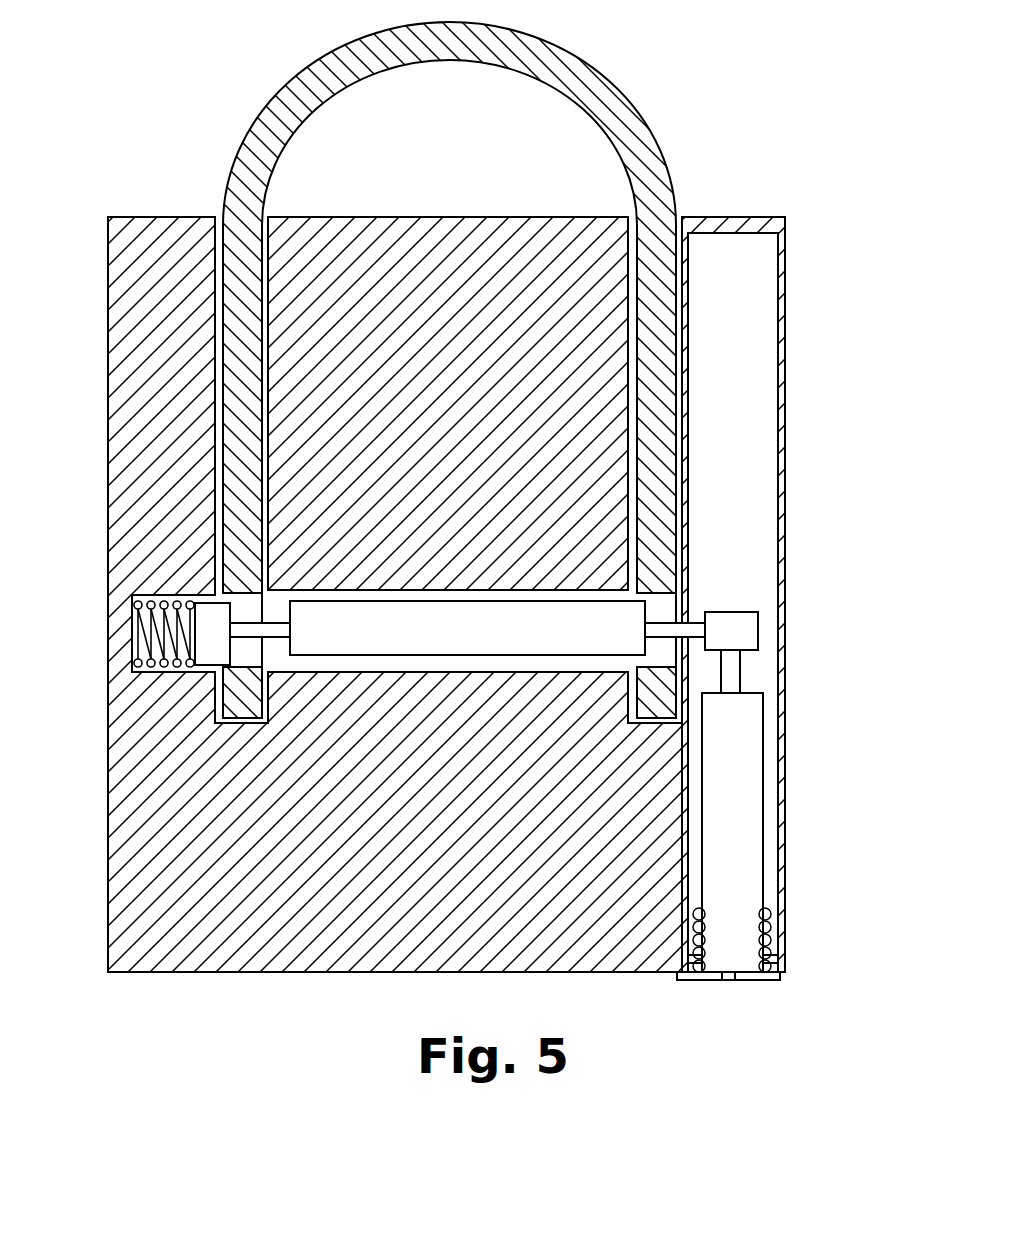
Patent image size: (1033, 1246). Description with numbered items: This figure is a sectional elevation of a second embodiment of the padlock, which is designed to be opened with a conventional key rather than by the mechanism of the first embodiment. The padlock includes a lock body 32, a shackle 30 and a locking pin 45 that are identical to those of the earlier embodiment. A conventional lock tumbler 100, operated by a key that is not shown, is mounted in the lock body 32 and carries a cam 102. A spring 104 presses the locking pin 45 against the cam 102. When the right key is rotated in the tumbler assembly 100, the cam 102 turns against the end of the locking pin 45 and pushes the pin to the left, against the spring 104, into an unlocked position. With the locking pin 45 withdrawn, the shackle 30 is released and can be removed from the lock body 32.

The shackle 30 is at (613, 110).
The lock body 32 is at (418, 240).
The locking pin 45 is at (418, 631).
The spring 104 is at (150, 607).
The cam 102 is at (733, 623).
The lock tumbler 100 is at (727, 822).